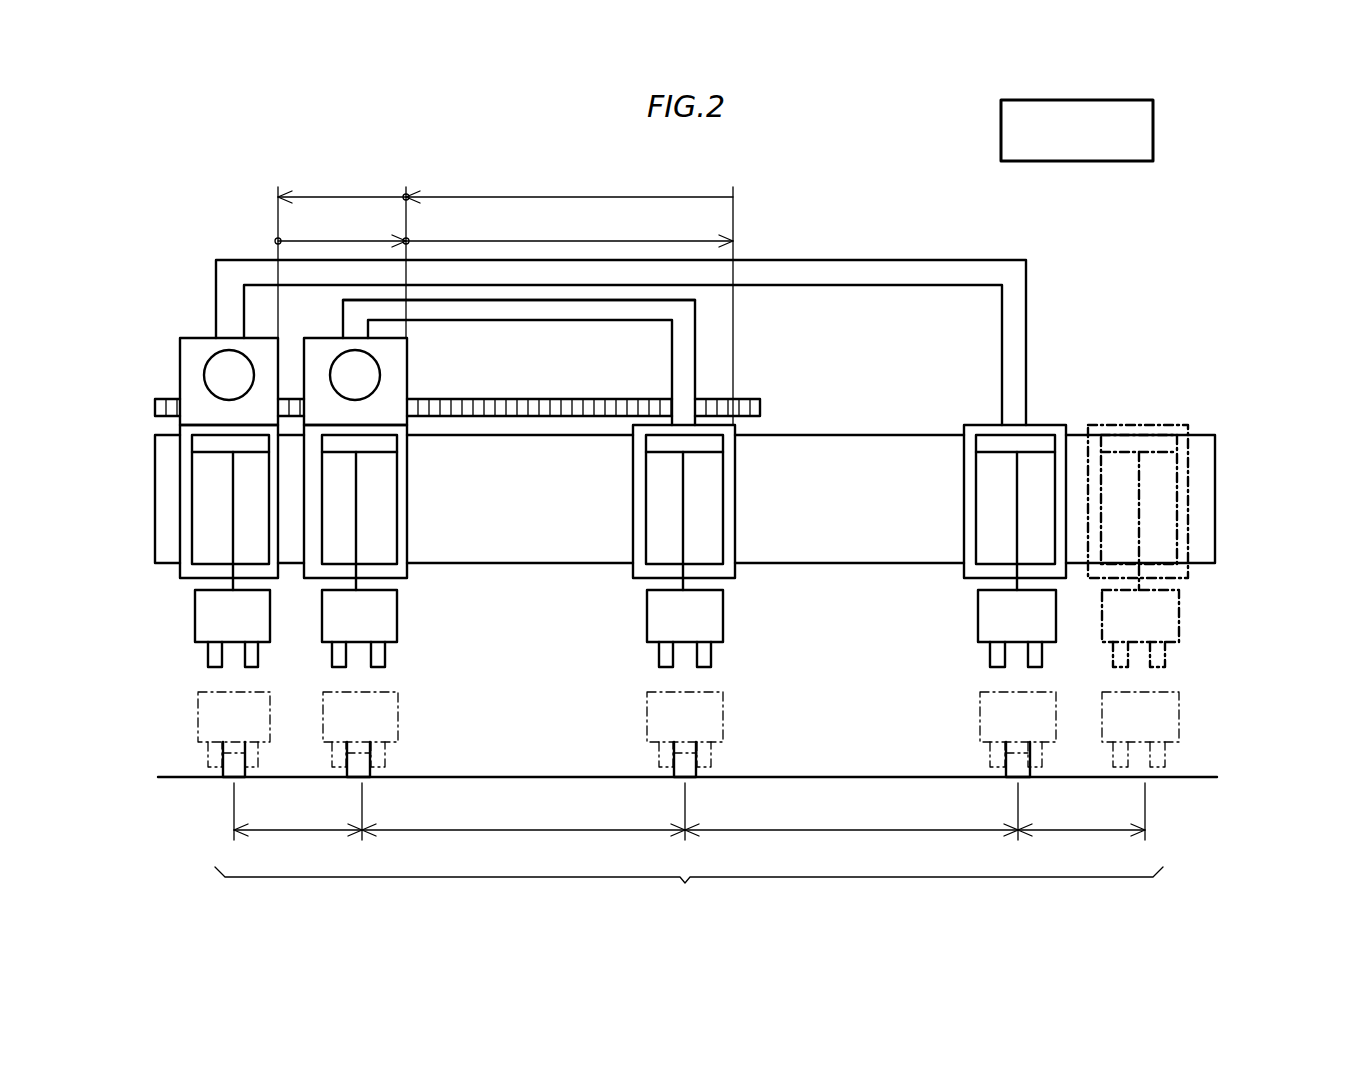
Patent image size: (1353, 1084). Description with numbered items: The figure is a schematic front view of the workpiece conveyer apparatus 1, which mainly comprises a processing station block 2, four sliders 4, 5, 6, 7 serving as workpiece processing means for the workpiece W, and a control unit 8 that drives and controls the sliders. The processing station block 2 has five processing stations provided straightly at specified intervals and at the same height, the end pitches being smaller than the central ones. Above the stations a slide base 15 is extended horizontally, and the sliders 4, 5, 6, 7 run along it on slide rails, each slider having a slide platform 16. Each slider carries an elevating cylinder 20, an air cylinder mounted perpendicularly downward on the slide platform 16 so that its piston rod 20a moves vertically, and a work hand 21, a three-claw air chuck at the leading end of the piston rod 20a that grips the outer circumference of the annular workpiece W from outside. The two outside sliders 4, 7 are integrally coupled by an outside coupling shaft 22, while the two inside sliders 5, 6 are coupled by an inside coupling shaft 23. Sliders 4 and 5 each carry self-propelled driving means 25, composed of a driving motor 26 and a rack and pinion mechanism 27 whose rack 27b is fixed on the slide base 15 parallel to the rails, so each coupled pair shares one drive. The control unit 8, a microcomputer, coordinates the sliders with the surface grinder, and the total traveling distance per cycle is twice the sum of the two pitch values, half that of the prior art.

The workpiece conveyer apparatus 1 is at (195, 187).
The processing station block 2 is at (689, 846).
The slider 4 is at (169, 610).
The slider 5 is at (418, 616).
The slider 6 is at (617, 616).
The slider 7 is at (954, 611).
The control unit 8 is at (1153, 141).
The slide base 15 is at (1229, 435).
The slide platform 16 is at (185, 478).
The elevating cylinder 20 is at (180, 523).
The piston rod 20a is at (228, 535).
The work hand 21 is at (203, 627).
The outside coupling shaft 22 is at (860, 262).
The inside coupling shaft 23 is at (521, 305).
The self-propelled driving means 25 is at (166, 359).
The driving motor 26 is at (212, 349).
The rack and pinion mechanism 27 is at (457, 380).
The rack 27b is at (607, 400).
The workpiece W is at (223, 771).